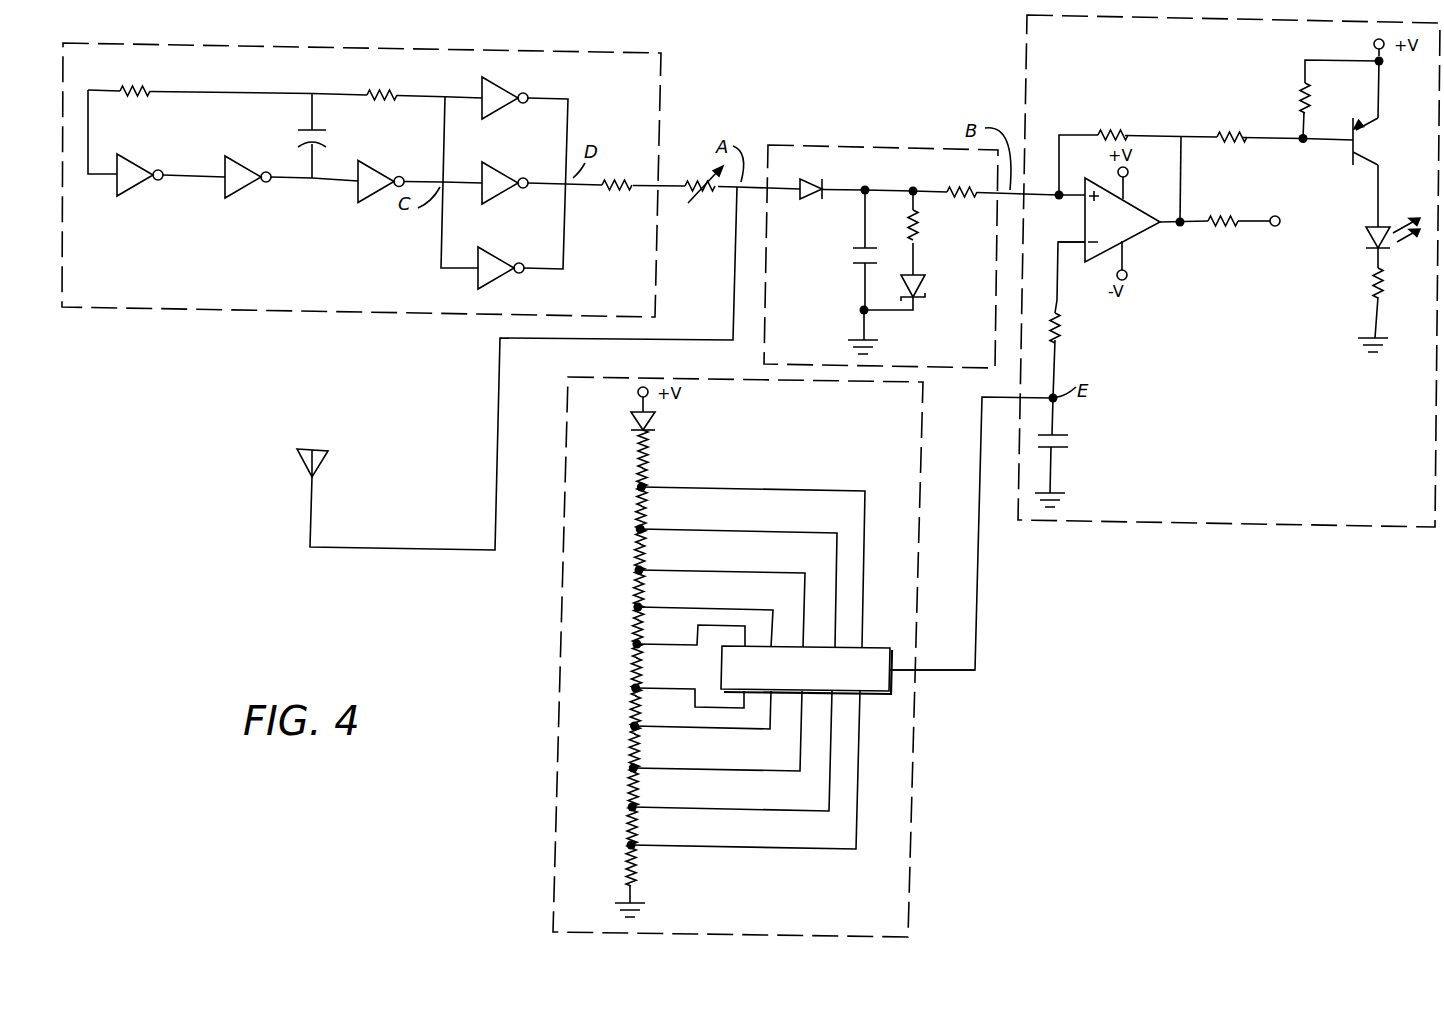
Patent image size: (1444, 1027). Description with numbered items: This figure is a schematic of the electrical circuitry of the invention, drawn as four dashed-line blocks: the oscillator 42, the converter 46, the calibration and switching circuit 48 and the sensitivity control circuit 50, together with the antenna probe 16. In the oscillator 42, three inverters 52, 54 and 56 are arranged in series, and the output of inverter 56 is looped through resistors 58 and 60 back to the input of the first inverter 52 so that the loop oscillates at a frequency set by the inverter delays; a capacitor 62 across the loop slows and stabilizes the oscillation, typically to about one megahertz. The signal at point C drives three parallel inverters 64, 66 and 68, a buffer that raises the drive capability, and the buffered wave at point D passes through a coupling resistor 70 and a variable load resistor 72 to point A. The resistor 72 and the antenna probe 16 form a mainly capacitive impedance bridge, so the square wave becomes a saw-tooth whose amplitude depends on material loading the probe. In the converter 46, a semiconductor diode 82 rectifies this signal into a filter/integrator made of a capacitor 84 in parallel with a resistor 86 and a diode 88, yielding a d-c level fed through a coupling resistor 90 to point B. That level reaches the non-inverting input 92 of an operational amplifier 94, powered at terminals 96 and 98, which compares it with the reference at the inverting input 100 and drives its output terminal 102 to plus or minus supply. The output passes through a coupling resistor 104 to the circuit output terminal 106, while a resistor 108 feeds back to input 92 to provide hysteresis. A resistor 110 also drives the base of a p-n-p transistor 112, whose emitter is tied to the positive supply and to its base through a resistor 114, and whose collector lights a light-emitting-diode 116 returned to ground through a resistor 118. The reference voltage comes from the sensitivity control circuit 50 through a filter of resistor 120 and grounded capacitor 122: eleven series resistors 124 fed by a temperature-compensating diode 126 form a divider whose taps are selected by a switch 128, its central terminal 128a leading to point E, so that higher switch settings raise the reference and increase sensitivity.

The antenna probe 16 is at (297, 458).
The oscillator 42 is at (668, 106).
The converter 46 is at (848, 146).
The calibration and switching circuit 48 is at (1218, 528).
The sensitivity control circuit 50 is at (917, 787).
The inverter 52 is at (137, 183).
The inverter 54 is at (243, 186).
The inverter 56 is at (379, 168).
The resistor 58 is at (384, 94).
The resistor 60 is at (138, 91).
The capacitor 62 is at (304, 128).
The inverter 64 is at (505, 87).
The inverter 66 is at (512, 168).
The inverter 68 is at (505, 253).
The coupling resistor 70 is at (613, 184).
The variable load resistor 72 is at (707, 188).
The semiconductor diode 82 is at (812, 173).
The capacitor 84 is at (857, 250).
The resistor 86 is at (922, 228).
The diode 88 is at (923, 282).
The coupling resistor 90 is at (968, 178).
The non-inverting input 92 is at (1083, 203).
The operational amplifier 94 is at (1138, 203).
The power terminal 96 is at (1121, 189).
The power terminal 98 is at (1124, 243).
The inverting input 100 is at (1085, 262).
The output terminal 102 is at (1164, 224).
The coupling resistor 104 is at (1218, 219).
The circuit output terminal 106 is at (1278, 221).
The resistor 108 is at (1110, 136).
The resistor 110 is at (1227, 137).
The transistor 112 is at (1358, 150).
The resistor 114 is at (1310, 102).
The light-emitting-diode 116 is at (1362, 234).
The resistor 118 is at (1370, 275).
The resistor 120 is at (1062, 328).
The capacitor 122 is at (1062, 437).
The resistors 124 is at (618, 511).
The semiconductor diode 126 is at (655, 420).
The switch 128 is at (882, 646).
The central terminal 128a is at (898, 672).